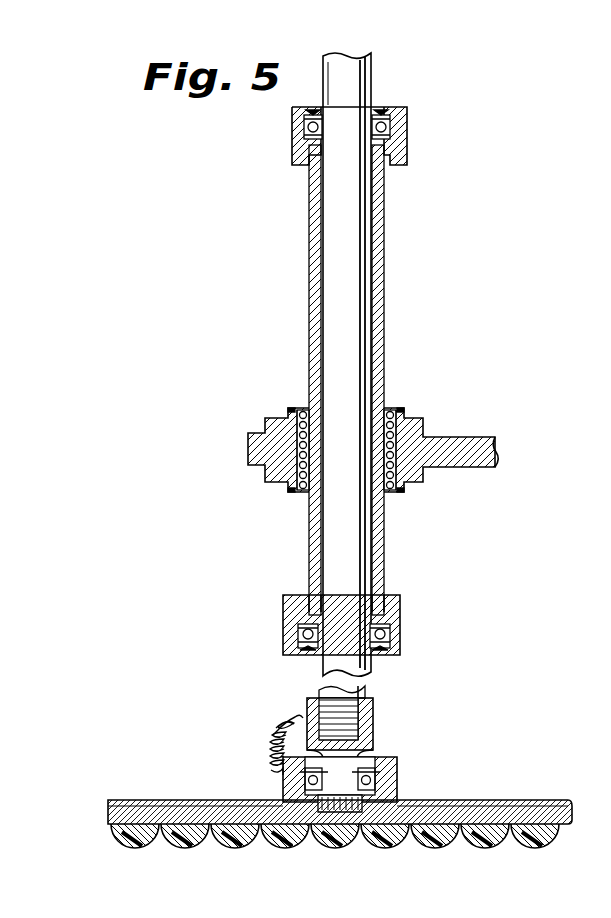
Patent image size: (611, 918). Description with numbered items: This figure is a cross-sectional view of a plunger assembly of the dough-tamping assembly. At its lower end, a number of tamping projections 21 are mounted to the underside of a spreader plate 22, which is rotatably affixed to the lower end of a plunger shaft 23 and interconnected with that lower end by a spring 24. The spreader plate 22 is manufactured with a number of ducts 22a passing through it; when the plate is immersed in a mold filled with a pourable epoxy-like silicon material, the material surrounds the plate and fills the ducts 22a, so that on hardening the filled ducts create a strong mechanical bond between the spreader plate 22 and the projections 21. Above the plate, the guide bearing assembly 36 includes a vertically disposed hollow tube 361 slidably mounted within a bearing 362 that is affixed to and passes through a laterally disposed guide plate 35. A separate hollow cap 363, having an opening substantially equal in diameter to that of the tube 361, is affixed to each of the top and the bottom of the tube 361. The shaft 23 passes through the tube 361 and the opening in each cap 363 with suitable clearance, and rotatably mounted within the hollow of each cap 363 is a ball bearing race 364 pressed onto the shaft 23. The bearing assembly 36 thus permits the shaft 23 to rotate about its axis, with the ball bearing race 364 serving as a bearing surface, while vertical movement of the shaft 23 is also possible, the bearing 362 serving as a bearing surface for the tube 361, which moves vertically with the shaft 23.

The tamping projections 21 is at (330, 848).
The spreader plate 22 is at (470, 853).
The ducts 22a is at (435, 802).
The plunger shaft 23 is at (372, 83).
The spring 24 is at (272, 740).
The guide plate 35 is at (452, 437).
The guide bearing assembly 36 is at (423, 392).
The hollow tube 361 is at (384, 312).
The bearing 362 is at (393, 407).
The hollow cap 363 is at (407, 142).
The ball bearing race 364 is at (407, 120).